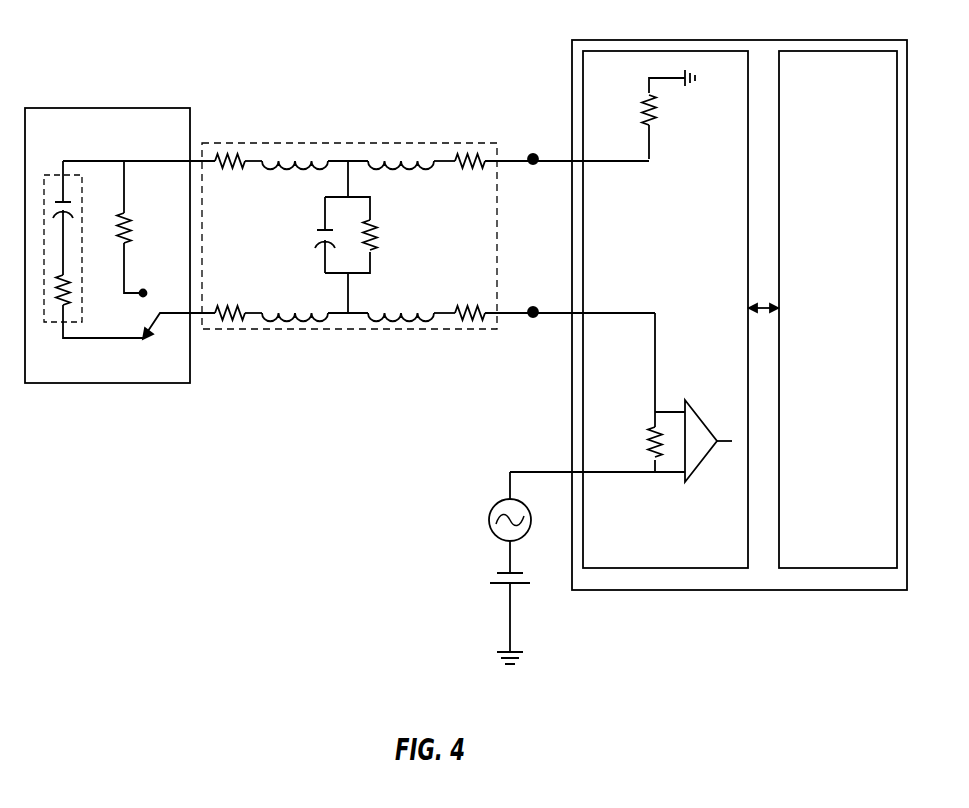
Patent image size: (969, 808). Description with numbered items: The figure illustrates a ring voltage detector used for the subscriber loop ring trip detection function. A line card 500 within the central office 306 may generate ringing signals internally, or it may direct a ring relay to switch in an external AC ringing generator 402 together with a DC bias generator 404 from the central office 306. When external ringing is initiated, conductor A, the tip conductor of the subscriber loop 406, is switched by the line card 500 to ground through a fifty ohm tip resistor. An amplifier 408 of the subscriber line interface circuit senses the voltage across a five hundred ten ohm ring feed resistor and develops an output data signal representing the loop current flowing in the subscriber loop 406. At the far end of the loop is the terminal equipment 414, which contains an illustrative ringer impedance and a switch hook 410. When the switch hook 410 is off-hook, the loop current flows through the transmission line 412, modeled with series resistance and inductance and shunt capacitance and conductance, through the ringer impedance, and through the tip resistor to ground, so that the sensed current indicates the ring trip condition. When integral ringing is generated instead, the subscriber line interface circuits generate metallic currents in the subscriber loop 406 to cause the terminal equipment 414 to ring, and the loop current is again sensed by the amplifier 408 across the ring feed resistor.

The central office 306 is at (708, 343).
The external AC ringing generator 402 is at (496, 504).
The DC bias generator 404 is at (500, 590).
The subscriber loop 406 is at (230, 361).
The amplifier 408 is at (713, 380).
The switch hook 410 is at (153, 327).
The transmission line 412 is at (355, 329).
The terminal equipment 414 is at (120, 273).
The line card 500 is at (658, 279).